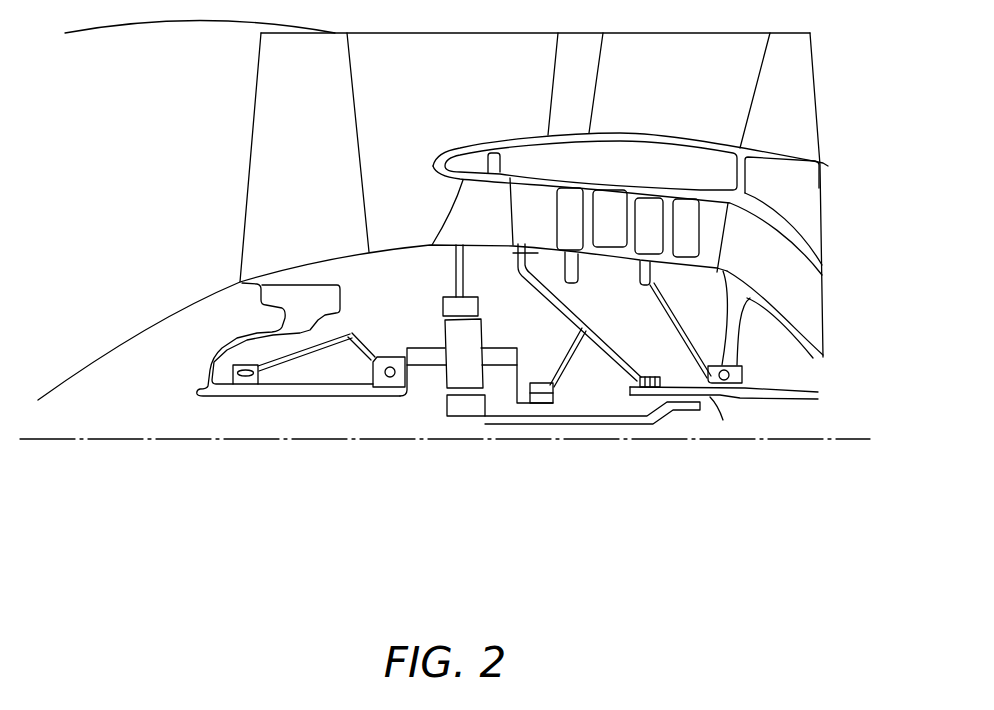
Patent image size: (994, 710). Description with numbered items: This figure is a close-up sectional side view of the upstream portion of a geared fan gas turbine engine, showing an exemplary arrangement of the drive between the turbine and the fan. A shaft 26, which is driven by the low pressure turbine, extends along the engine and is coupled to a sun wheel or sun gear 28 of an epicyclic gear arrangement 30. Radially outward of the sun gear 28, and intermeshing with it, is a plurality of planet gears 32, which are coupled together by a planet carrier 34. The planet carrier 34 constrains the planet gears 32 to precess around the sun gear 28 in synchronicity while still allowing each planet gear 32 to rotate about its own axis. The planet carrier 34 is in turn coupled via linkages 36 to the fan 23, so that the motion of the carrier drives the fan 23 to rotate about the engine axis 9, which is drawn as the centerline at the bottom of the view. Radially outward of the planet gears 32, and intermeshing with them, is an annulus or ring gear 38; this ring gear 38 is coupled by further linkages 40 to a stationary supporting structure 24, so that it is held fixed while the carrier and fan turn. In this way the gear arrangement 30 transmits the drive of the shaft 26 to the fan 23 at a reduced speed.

The engine axis 9 is at (157, 442).
The fan 23 is at (278, 153).
The stationary supporting structure 24 is at (463, 205).
The shaft 26 is at (590, 421).
The sun gear 28 is at (467, 407).
The epicyclic gear arrangement 30 is at (430, 390).
The planet gears 32 is at (438, 397).
The planet carrier 34 is at (520, 371).
The linkages 36 is at (418, 391).
The ring gear 38 is at (468, 307).
The linkages 40 is at (467, 278).